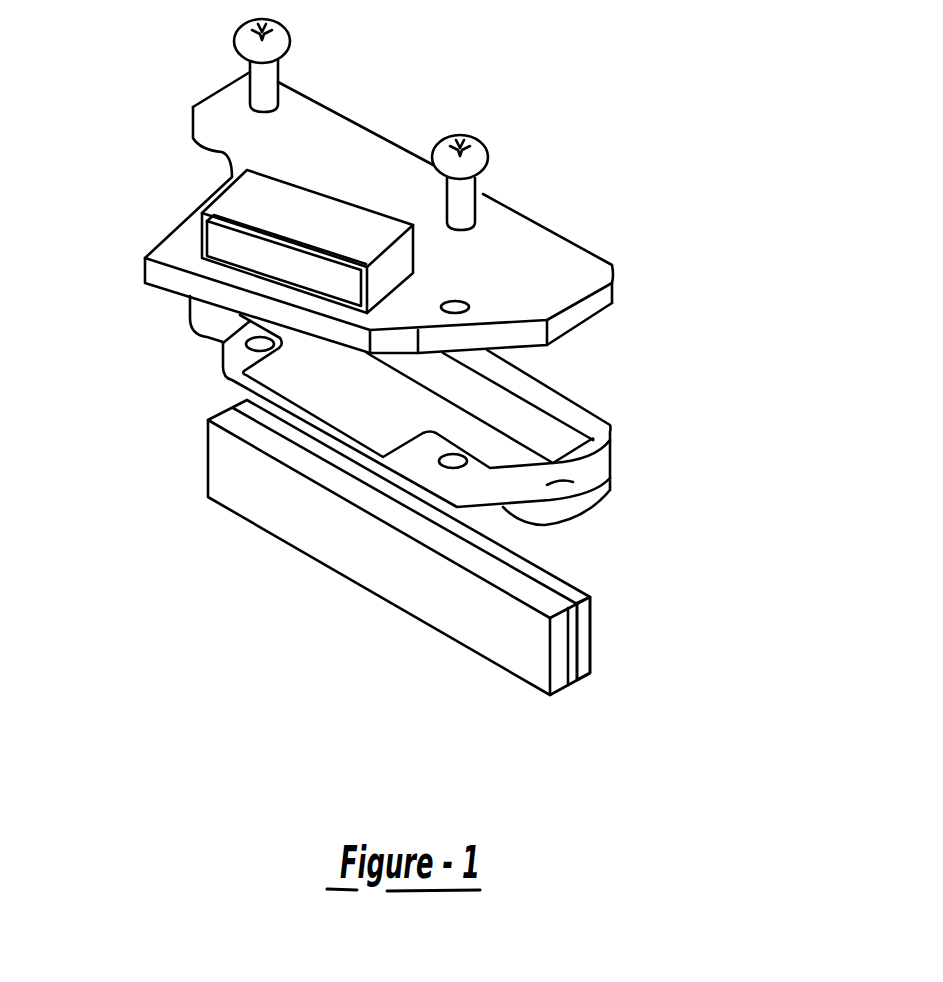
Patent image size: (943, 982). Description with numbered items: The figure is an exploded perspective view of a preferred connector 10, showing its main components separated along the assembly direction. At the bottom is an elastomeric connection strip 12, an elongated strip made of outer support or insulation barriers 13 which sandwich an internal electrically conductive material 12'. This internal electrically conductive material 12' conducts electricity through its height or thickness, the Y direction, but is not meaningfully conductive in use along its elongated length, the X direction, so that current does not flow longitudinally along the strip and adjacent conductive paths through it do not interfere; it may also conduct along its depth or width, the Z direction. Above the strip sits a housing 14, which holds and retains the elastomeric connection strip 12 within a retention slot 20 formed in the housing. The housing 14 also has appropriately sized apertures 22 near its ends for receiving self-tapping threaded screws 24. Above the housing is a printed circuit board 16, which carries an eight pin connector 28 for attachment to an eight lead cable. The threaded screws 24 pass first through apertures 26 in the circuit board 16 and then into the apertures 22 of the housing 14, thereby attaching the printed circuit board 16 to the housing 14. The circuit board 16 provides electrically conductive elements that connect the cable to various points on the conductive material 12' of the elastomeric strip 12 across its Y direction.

The connector 10 is at (631, 283).
The elastomeric connection strip 12 is at (456, 547).
The internal electrically conductive material 12' is at (607, 674).
The outer support or insulation barriers 13 is at (247, 437).
The housing 14 is at (620, 477).
The printed circuit board 16 is at (548, 222).
The retention slot 20 is at (560, 440).
The apertures 22 is at (257, 345).
The self-tapping threaded screws 24 is at (280, 48).
The apertures 26 is at (470, 306).
The eight pin connector 28 is at (227, 250).